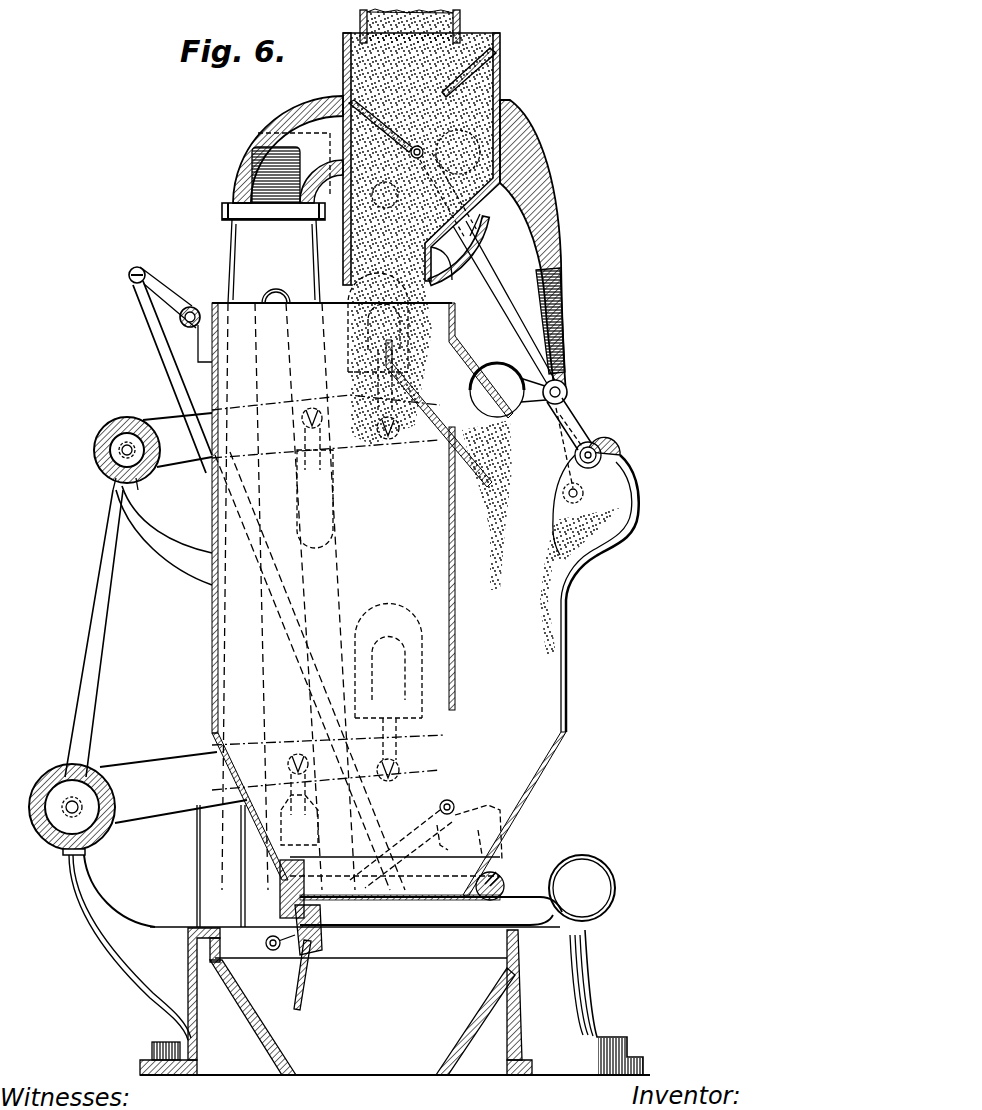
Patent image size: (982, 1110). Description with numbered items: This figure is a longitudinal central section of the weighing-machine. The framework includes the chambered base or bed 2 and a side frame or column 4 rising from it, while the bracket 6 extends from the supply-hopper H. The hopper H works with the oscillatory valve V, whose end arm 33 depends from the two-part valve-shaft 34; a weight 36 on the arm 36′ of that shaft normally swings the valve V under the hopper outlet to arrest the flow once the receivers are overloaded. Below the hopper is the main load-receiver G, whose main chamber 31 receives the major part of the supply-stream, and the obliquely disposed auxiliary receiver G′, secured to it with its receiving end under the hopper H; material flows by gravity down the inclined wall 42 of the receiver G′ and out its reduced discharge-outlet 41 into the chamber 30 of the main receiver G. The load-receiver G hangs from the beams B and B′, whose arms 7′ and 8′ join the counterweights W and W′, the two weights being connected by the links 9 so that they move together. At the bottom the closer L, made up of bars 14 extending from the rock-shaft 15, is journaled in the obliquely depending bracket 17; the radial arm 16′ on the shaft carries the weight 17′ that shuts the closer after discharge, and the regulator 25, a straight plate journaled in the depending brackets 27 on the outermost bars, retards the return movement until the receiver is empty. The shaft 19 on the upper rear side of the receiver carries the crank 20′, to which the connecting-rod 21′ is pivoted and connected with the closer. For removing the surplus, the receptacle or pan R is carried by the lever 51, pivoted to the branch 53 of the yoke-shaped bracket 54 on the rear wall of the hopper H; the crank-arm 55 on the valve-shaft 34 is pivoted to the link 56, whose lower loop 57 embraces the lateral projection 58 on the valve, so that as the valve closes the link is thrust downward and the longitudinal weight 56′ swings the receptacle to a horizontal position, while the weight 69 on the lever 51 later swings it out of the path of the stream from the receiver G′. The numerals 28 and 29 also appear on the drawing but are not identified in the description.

The supply-hopper H is at (497, 52).
The bracket 6 is at (288, 112).
The weight 36 is at (462, 130).
The yoke-shaped bracket 54 is at (508, 118).
The crank-arm 55 is at (410, 152).
The end arm 33 is at (484, 217).
The valve-shaft 34 is at (319, 222).
The arm 36′ is at (393, 208).
The side frame or column 4 is at (230, 242).
The valve V is at (478, 244).
The link 56 is at (494, 290).
The crank 20′ is at (150, 273).
The shaft 19 is at (196, 306).
The branch 53 is at (562, 290).
The connecting-rod 21′ is at (165, 362).
The weight 69 is at (495, 364).
The beam B′ is at (177, 433).
The loop 57 is at (583, 440).
The lever 51 is at (555, 422).
The counterweight W′ is at (98, 452).
The longitudinal weight 56′ is at (616, 446).
The lateral projection 58 is at (580, 456).
The auxiliary receiver G′ is at (446, 418).
The beam-arm 8′ is at (196, 466).
The inclined wall 42 is at (449, 478).
The receptacle or pan R is at (633, 486).
The discharge-outlet 41 is at (492, 494).
The main load-receiver G is at (212, 580).
The main chamber 31 is at (328, 581).
The links 9 is at (96, 605).
The chamber 30 is at (514, 753).
The counterweight W is at (48, 780).
The beam B is at (173, 785).
The beam-arm 7′ is at (123, 874).
The bracket 17 is at (500, 845).
The rock-shaft 15 is at (502, 857).
The radial arm 16′ is at (520, 870).
The weight 17′ is at (582, 888).
The closer L is at (431, 910).
The gate 29 is at (282, 903).
The depending brackets 27 is at (322, 928).
The bars 14 is at (362, 914).
The pivot 28 is at (275, 952).
The chambered base or bed 2 is at (359, 940).
The regulator 25 is at (300, 1008).